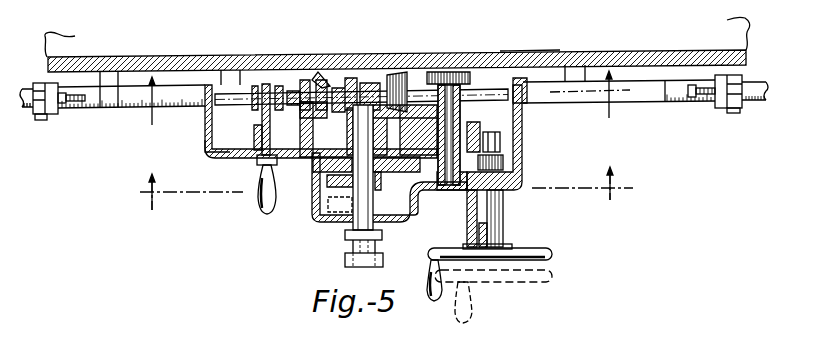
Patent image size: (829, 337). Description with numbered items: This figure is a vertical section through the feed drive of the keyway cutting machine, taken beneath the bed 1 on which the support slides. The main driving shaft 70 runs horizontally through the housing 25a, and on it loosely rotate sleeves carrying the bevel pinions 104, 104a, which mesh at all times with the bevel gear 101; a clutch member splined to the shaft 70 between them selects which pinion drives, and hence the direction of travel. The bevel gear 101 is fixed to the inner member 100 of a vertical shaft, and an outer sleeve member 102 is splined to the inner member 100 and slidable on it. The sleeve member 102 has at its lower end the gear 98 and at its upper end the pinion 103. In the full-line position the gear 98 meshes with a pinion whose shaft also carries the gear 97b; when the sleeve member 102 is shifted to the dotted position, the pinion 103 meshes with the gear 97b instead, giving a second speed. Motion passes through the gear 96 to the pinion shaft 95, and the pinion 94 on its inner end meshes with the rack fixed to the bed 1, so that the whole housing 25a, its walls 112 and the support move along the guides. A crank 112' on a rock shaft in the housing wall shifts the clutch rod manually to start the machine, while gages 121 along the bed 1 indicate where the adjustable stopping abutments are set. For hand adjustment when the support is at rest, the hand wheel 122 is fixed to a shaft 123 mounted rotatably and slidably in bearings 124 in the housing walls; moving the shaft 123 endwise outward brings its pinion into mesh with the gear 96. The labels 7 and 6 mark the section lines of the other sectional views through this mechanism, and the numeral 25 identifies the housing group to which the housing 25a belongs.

The bed 1 is at (748, 61).
The shaft 70 is at (533, 50).
The gages 121 is at (118, 111).
The section line 7 is at (387, 98).
The section line 6 is at (385, 190).
The end walls 112 is at (360, 134).
The housing 25a is at (205, 152).
The pinion 94 is at (494, 88).
The bevel pinion 104 is at (327, 78).
The bevel pinion 104a is at (400, 80).
The bevel gear 101 is at (300, 140).
The shaft 95 is at (462, 117).
The bolt 25 is at (500, 138).
The shaft 123 is at (520, 133).
The pinion 103 is at (375, 163).
The gear 96 is at (465, 195).
The gear 97b is at (330, 183).
The gear 98 is at (335, 205).
The sleeve member 102 is at (356, 196).
The inner member 100 is at (344, 237).
The bearings 124 is at (490, 198).
The hand wheel 122 is at (552, 256).
The crank 112' is at (337, 239).